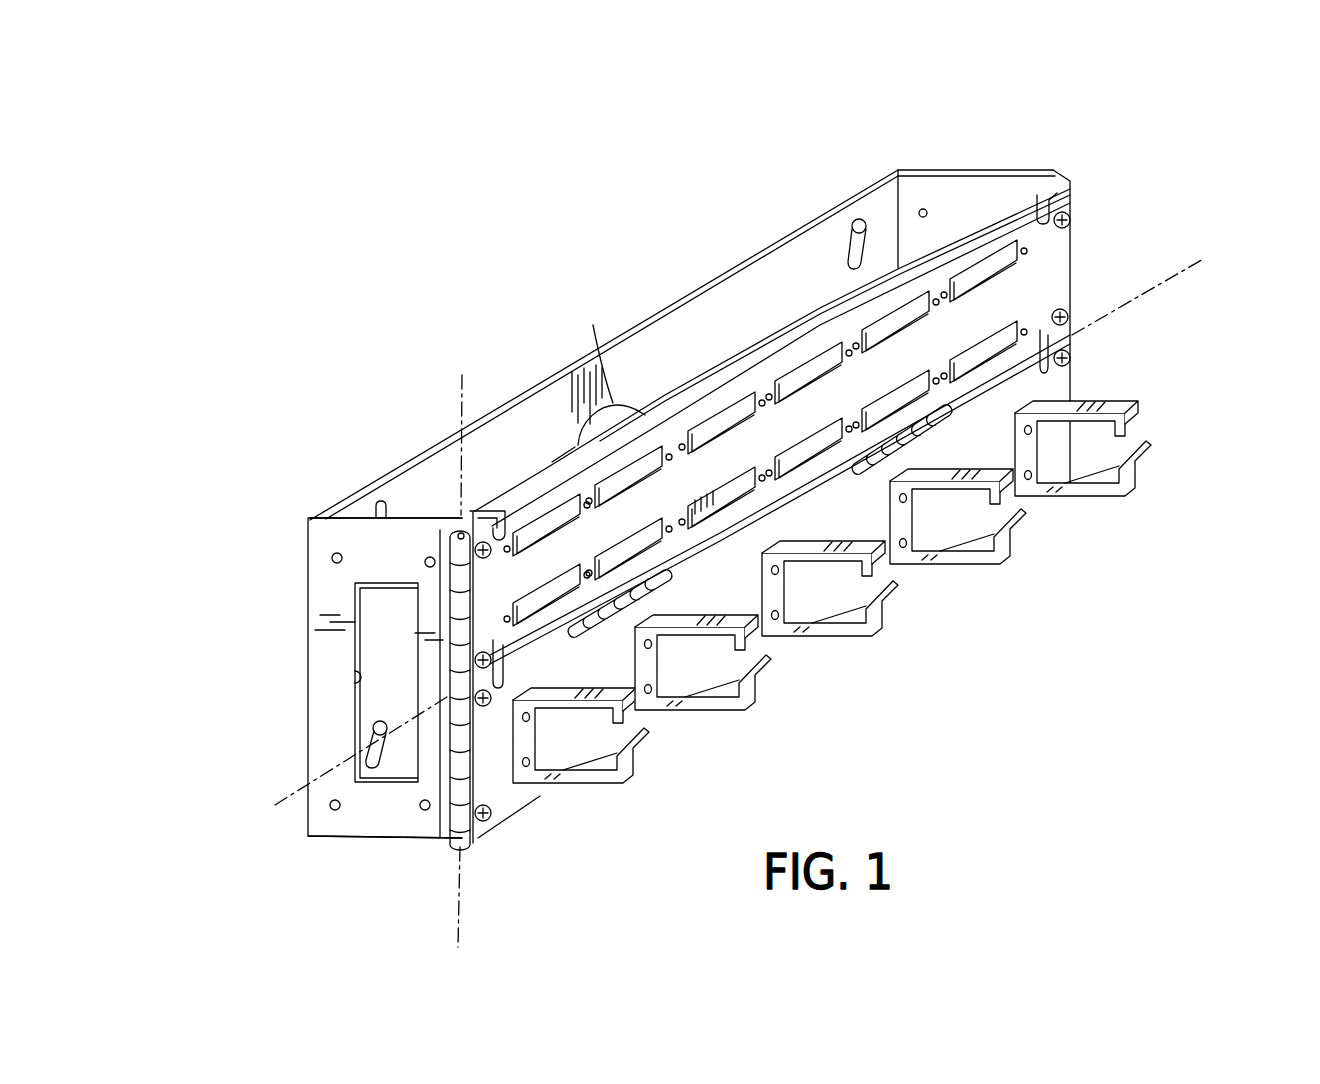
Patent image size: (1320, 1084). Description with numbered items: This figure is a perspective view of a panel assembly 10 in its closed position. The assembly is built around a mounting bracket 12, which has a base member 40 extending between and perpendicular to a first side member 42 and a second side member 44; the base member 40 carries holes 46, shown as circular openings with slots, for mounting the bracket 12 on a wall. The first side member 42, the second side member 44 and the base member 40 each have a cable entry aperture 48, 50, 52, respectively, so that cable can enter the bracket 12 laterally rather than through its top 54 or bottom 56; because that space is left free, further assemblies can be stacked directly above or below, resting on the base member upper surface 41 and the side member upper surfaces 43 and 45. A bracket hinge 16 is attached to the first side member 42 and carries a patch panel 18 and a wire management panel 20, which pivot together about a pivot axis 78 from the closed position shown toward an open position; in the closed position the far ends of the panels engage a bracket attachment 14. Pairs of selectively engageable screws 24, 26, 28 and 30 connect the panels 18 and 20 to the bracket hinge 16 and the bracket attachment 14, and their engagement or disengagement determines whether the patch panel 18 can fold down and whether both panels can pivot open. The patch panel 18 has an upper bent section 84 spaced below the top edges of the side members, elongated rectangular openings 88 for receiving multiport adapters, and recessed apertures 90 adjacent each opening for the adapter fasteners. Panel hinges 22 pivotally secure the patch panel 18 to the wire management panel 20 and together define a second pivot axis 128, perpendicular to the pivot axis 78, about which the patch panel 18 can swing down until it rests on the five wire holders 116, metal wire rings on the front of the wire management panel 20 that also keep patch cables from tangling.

The panel assembly 10 is at (525, 360).
The mounting bracket 12 is at (304, 554).
The bracket attachment 14 is at (1062, 184).
The bracket hinge 16 is at (430, 838).
The patch panel 18 is at (1046, 255).
The wire management panel 20 is at (1055, 383).
The panel hinge 22 is at (855, 478).
The screws 24 is at (484, 558).
The screws 26 is at (1075, 203).
The screws 28 is at (484, 822).
The screws 30 is at (1073, 366).
The base member 40 is at (418, 472).
The base member upper surface 41 is at (780, 238).
The first side member 42 is at (318, 617).
The side member upper surface 43 is at (345, 505).
The second side member 44 is at (915, 183).
The side member upper surface 45 is at (962, 168).
The holes 46 is at (858, 218).
The cable entry aperture 48 is at (362, 682).
The cable entry aperture 50 is at (972, 268).
The cable entry aperture 52 is at (594, 328).
The top 54 is at (720, 269).
The bottom 56 is at (355, 840).
The pivot axis 78 is at (462, 398).
The upper bent section 84 is at (752, 350).
The rectangular openings 88 is at (822, 357).
The recessed apertures 90 is at (760, 398).
The wire holders 116 is at (980, 572).
The second pivot axis 128 is at (1155, 293).